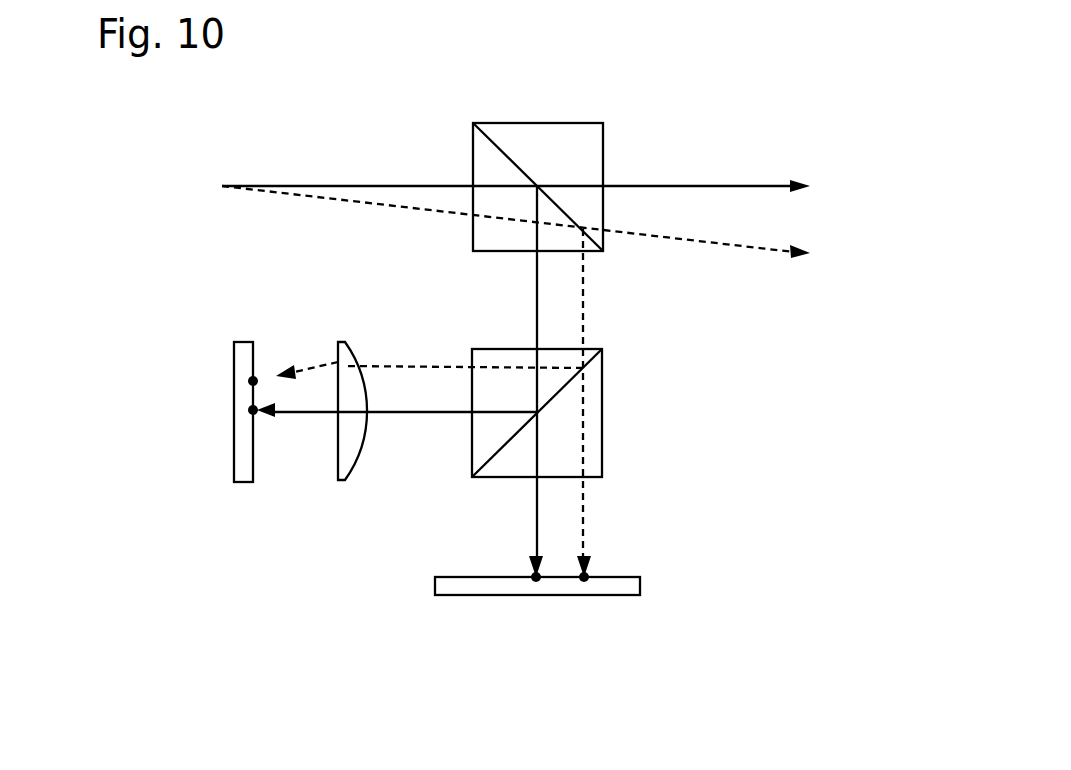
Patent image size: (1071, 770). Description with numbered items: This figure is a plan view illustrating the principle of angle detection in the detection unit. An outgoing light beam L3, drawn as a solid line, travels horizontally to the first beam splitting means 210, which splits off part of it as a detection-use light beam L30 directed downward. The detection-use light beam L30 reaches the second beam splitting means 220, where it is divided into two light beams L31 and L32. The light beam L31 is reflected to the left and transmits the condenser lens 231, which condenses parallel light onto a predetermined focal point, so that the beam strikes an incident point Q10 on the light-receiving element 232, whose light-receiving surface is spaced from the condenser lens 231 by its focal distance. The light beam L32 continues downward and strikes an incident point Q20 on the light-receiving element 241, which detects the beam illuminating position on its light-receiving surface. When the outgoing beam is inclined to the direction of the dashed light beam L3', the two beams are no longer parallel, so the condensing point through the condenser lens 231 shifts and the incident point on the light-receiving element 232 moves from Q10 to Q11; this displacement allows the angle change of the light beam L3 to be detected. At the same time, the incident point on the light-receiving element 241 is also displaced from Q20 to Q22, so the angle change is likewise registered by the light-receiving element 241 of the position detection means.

The first beam splitting means 210 is at (562, 147).
The second beam splitting means 220 is at (603, 379).
The condenser lens 231 is at (348, 480).
The light-receiving element 232 is at (242, 482).
The light-receiving element 241 is at (640, 587).
The incident point Q10 is at (252, 410).
The incident point Q11 is at (252, 380).
The incident point Q20 is at (531, 581).
The incident point Q22 is at (585, 581).
The light beam L3 is at (544, 190).
The light beam L3' is at (546, 227).
The detection-use light beam L30 is at (507, 299).
The light beam L31 is at (397, 428).
The light beam L32 is at (510, 494).